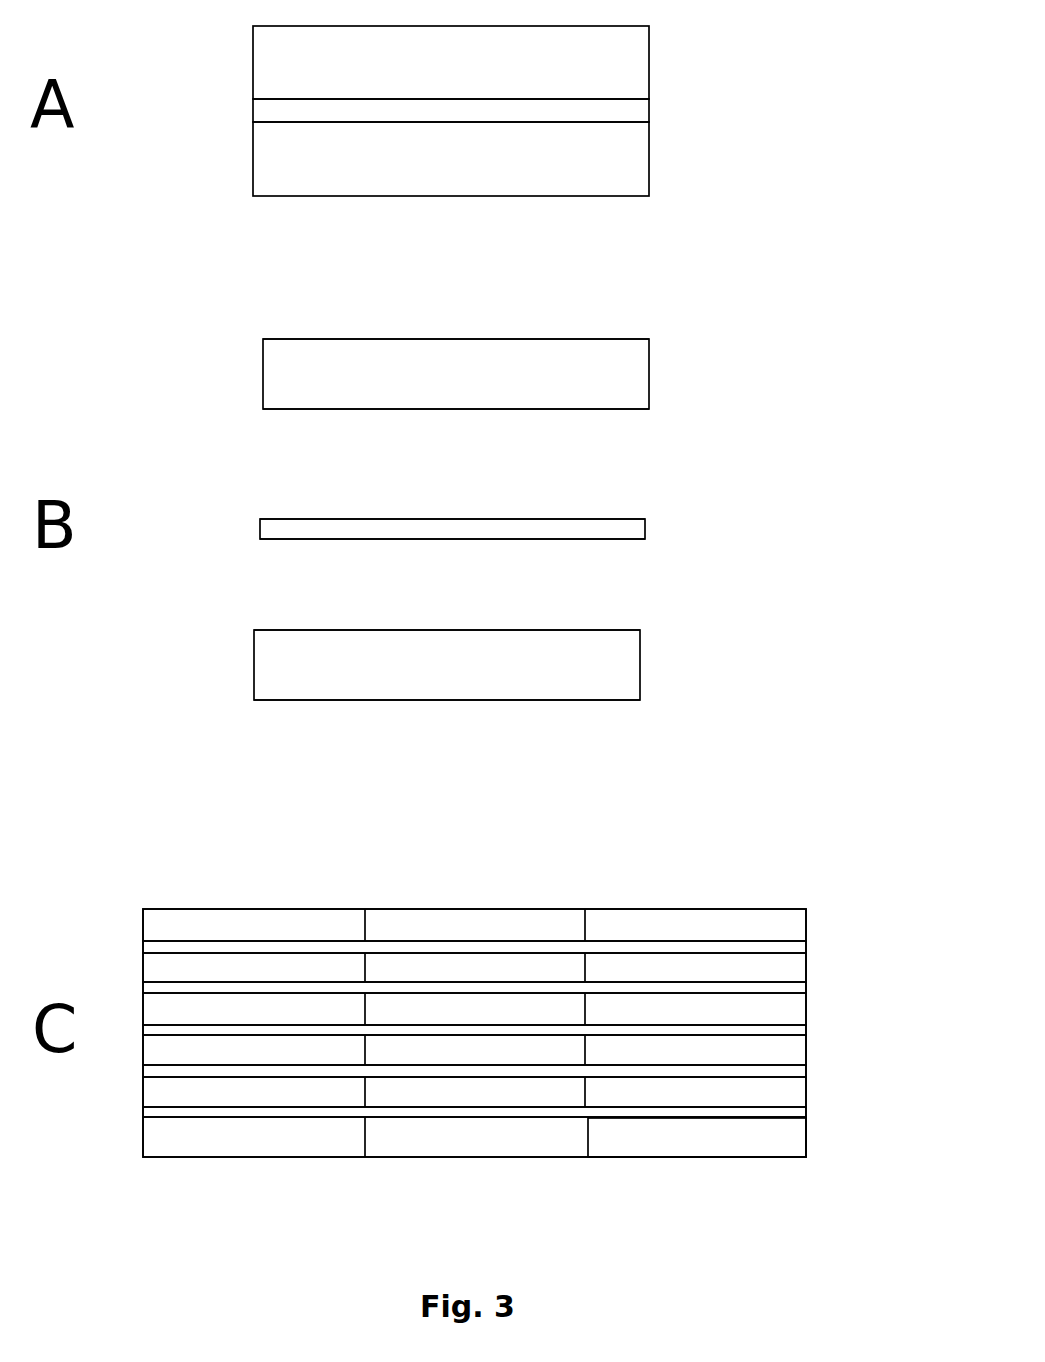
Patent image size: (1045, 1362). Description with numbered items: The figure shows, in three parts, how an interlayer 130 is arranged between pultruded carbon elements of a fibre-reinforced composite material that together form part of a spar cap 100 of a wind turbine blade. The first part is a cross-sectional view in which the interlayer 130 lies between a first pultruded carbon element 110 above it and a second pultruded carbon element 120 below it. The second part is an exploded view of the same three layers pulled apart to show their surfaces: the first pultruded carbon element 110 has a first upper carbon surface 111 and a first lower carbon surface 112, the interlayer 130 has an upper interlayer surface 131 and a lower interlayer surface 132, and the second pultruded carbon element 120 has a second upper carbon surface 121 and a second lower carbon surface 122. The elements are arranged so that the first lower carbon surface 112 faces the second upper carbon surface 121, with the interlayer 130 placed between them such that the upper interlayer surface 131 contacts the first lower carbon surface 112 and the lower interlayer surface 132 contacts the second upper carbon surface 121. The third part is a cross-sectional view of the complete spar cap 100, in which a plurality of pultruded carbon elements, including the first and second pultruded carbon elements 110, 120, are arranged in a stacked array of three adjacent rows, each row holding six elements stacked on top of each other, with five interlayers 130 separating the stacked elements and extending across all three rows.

In FIG. 3C, the spar cap 100 is at (752, 883).
In FIG. 3A, the first pultruded carbon element 110 is at (628, 76).
In FIG. 3B, the first pultruded carbon element 110 is at (613, 392).
In FIG. 3C, the first pultruded carbon element 110 is at (198, 920).
In FIG. 3B, the first upper carbon surface 111 is at (533, 337).
In FIG. 3B, the first lower carbon surface 112 is at (425, 410).
In FIG. 3A, the second pultruded carbon element 120 is at (637, 157).
In FIG. 3B, the second pultruded carbon element 120 is at (610, 680).
In FIG. 3C, the second pultruded carbon element 120 is at (278, 965).
In FIG. 3B, the second upper carbon surface 121 is at (523, 627).
In FIG. 3B, the second lower carbon surface 122 is at (407, 700).
In FIG. 3A, the interlayer 130 is at (638, 115).
In FIG. 3B, the interlayer 130 is at (627, 529).
In FIG. 3C, the interlayer 130 is at (795, 1032).
In FIG. 3B, the upper interlayer surface 131 is at (522, 515).
In FIG. 3B, the lower interlayer surface 132 is at (419, 540).